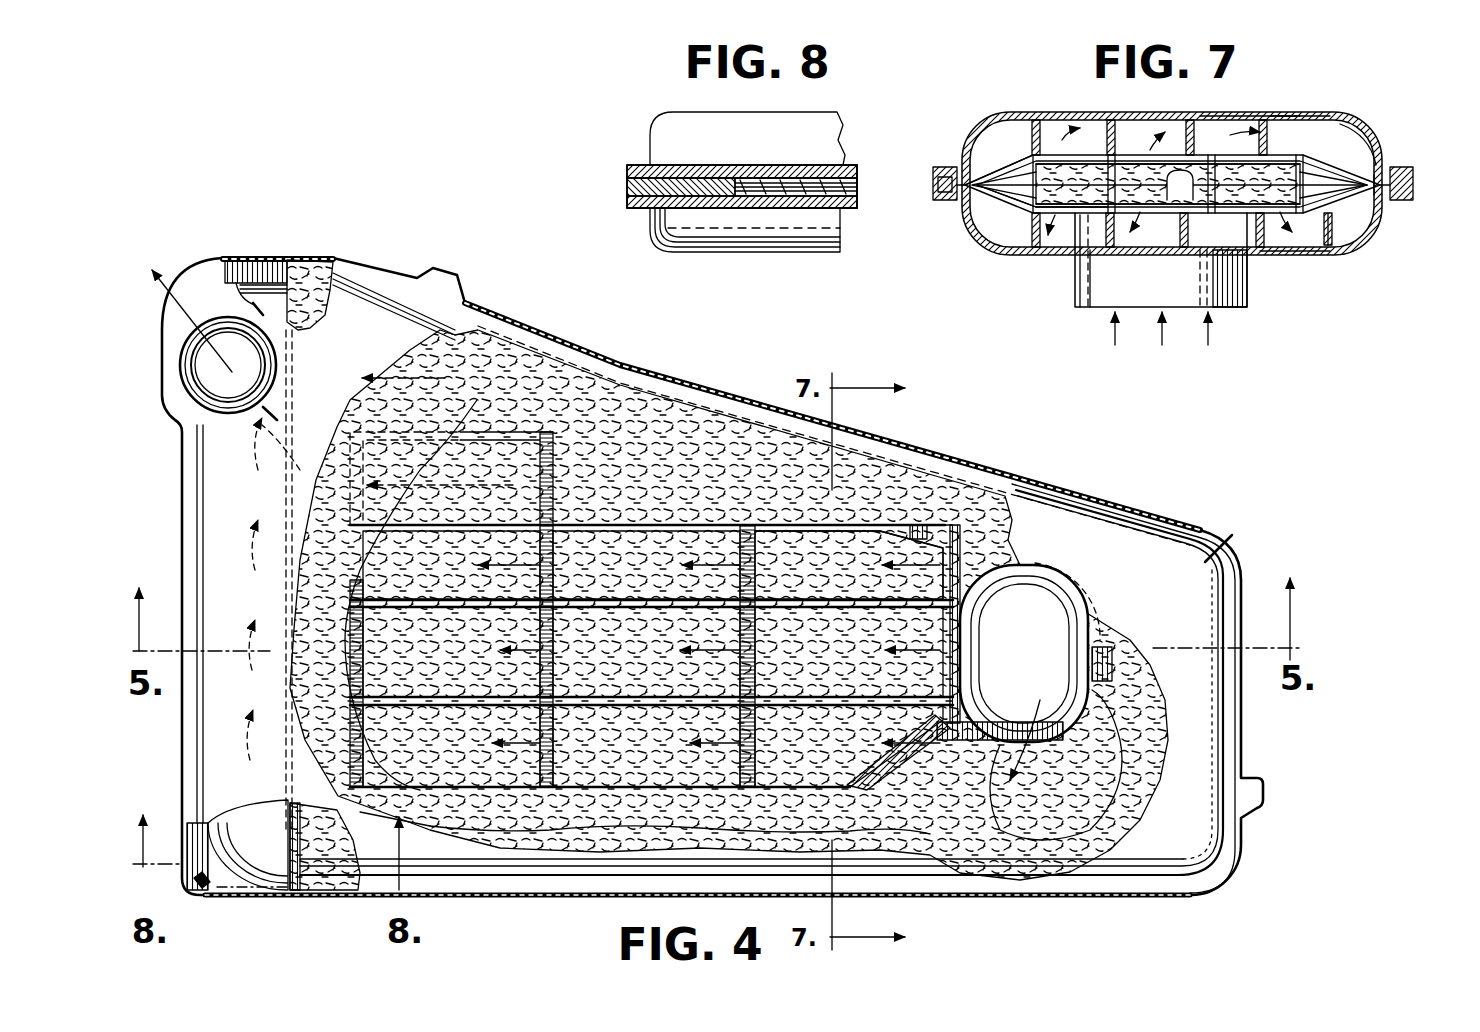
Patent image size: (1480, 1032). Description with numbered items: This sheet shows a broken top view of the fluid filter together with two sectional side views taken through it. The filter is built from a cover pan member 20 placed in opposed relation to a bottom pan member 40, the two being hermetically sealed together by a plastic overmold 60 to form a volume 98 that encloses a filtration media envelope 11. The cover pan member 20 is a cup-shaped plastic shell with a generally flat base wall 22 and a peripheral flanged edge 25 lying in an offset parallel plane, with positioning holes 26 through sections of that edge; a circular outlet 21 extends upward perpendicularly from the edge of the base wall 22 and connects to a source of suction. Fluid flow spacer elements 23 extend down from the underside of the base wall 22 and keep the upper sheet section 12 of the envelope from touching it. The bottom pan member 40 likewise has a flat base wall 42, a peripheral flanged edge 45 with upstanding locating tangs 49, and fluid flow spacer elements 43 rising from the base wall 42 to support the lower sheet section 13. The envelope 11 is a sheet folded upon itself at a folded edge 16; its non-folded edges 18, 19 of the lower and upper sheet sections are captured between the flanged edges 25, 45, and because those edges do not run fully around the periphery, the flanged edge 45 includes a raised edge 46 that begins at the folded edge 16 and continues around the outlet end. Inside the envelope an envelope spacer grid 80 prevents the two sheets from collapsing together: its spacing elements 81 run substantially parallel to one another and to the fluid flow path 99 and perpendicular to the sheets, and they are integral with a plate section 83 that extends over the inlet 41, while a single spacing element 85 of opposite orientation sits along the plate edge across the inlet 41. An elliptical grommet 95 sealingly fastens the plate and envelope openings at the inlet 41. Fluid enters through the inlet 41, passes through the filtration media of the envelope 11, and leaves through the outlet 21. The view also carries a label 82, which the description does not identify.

In FIG. 8, the filtration media envelope 11 is at (858, 190).
In FIG. 7, the filtration media envelope 11 is at (1000, 148).
In FIG. 4, the upper sheet section 12 is at (447, 318).
In FIG. 7, the upper sheet section 12 is at (1137, 170).
In FIG. 4, the lower sheet section 13 is at (547, 382).
In FIG. 7, the lower sheet section 13 is at (1070, 197).
In FIG. 4, the folded edge 16 is at (255, 262).
In FIG. 8, the folded edge 16 is at (727, 208).
In FIG. 8, the non-folded edge of lower sheet section 18 is at (855, 200).
In FIG. 8, the non-folded edge of upper sheet section 19 is at (855, 177).
In FIG. 4, the cover pan member 20 is at (1183, 608).
In FIG. 7, the cover pan member 20 is at (1283, 110).
In FIG. 4, the outlet 21 is at (203, 366).
In FIG. 7, the base wall 22 is at (1233, 113).
In FIG. 7, the fluid flow spacer elements 23 is at (1347, 143).
In FIG. 8, the peripheral flanged edge 25 is at (787, 167).
In FIG. 7, the peripheral flanged edge 25 is at (953, 165).
In FIG. 8, the positioning holes 26 is at (650, 163).
In FIG. 7, the bottom pan member 40 is at (1370, 250).
In FIG. 4, the inlet 41 is at (1035, 647).
In FIG. 7, the inlet 41 is at (1230, 308).
In FIG. 7, the base wall 42 is at (1283, 257).
In FIG. 7, the fluid flow spacer elements 43 is at (1337, 220).
In FIG. 8, the peripheral flanged edge 45 is at (793, 208).
In FIG. 7, the peripheral flanged edge 45 is at (953, 203).
In FIG. 4, the raised edge 46 is at (235, 885).
In FIG. 8, the raised edge 46 is at (650, 212).
In FIG. 4, the locating tangs 49 is at (202, 890).
In FIG. 4, the overmold 60 is at (1237, 747).
In FIG. 8, the overmold 60 is at (683, 163).
In FIG. 7, the overmold 60 is at (1417, 168).
In FIG. 4, the envelope spacer grid 80 is at (648, 480).
In FIG. 7, the envelope spacer grid 80 is at (1100, 177).
In FIG. 4, the spacing elements 81 is at (860, 522).
In FIG. 7, the spacing elements 81 is at (1023, 193).
In FIG. 4, the flow passage 82 is at (637, 513).
In FIG. 4, the plate section 83 is at (957, 733).
In FIG. 4, the single spacing element 85 is at (1120, 657).
In FIG. 7, the single spacing element 85 is at (1177, 170).
In FIG. 4, the elliptical grommet 95 is at (1062, 742).
In FIG. 7, the volume 98 is at (1317, 130).
In FIG. 4, the fluid flow path 99 is at (712, 553).